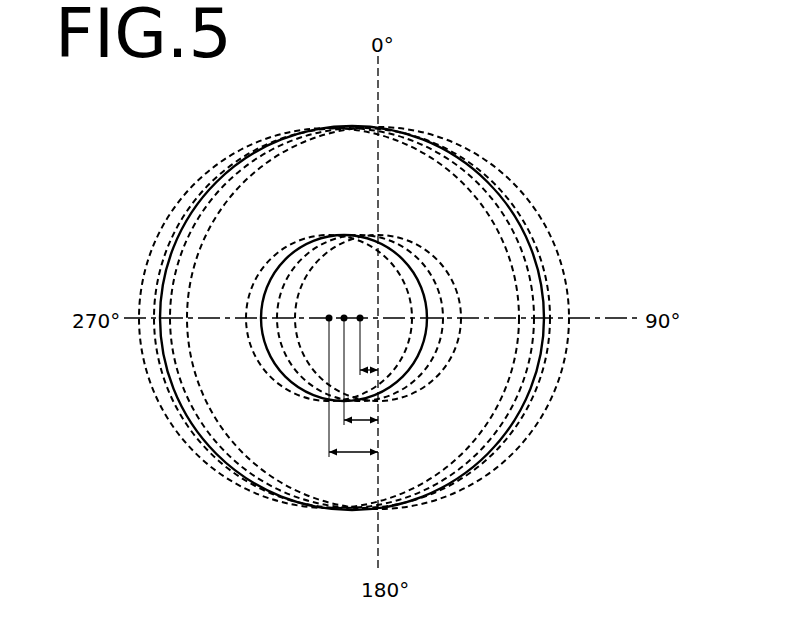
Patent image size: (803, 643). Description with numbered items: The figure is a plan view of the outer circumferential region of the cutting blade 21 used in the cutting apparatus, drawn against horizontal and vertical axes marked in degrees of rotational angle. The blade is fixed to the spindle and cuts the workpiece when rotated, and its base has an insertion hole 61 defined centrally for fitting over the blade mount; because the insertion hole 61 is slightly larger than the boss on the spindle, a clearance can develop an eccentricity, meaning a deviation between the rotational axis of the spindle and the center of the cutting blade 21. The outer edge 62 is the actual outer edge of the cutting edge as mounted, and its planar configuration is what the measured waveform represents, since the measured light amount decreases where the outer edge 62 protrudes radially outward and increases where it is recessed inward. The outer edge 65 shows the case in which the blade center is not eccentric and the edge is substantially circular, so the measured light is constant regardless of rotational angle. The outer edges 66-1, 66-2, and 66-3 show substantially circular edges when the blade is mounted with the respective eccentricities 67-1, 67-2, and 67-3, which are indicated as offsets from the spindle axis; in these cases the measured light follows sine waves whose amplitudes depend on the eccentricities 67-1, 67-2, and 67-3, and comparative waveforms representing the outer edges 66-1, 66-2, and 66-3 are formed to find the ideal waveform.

The cutting blade 21 is at (427, 110).
The insertion hole 61 is at (259, 262).
The outer edge 62 is at (535, 377).
The outer edge 65 is at (543, 215).
The outer edge 66-1 is at (557, 348).
The outer edge 66-2 is at (511, 226).
The outer edge 66-3 is at (476, 196).
The eccentricity 67-1 is at (373, 373).
The eccentricity 67-2 is at (362, 423).
The eccentricity 67-3 is at (351, 455).